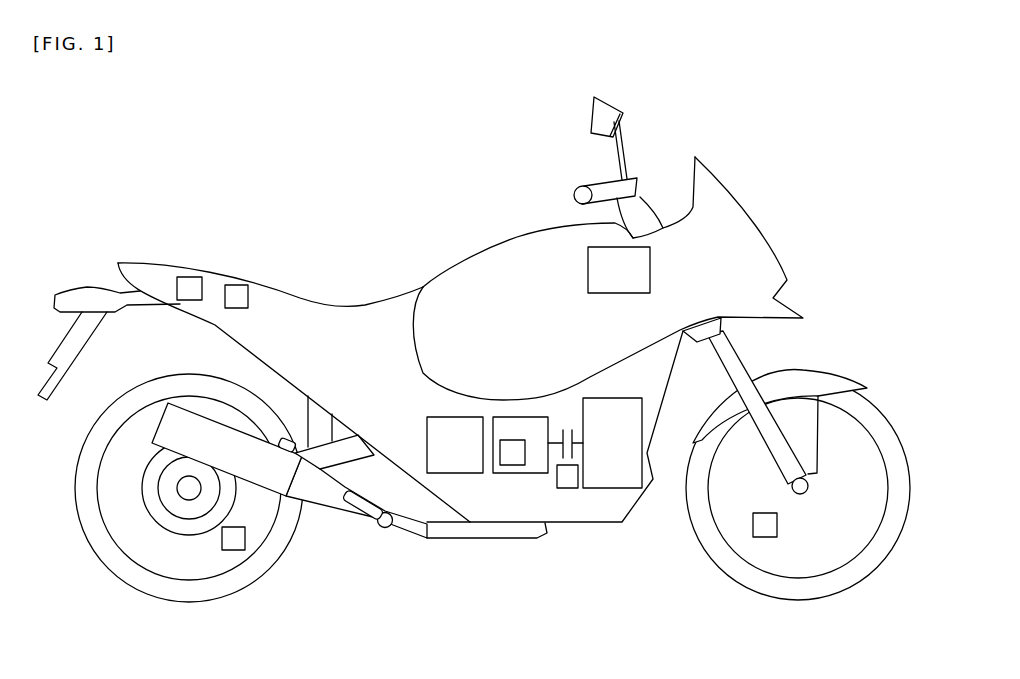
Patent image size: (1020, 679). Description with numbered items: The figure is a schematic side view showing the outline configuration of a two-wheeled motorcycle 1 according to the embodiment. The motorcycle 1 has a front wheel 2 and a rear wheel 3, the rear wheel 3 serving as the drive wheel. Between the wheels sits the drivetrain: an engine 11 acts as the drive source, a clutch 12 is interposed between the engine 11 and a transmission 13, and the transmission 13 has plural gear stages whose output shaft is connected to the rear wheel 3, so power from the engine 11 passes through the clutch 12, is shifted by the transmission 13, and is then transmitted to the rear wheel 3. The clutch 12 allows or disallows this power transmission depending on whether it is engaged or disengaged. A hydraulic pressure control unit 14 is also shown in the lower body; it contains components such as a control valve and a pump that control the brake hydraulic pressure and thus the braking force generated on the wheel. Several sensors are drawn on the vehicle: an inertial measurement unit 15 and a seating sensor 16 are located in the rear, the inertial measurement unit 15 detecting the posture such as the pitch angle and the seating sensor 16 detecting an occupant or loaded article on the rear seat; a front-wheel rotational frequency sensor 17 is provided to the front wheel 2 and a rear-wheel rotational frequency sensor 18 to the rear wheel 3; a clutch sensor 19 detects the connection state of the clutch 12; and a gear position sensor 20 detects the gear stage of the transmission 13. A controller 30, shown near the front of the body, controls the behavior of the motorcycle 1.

The motorcycle 1 is at (815, 111).
The front wheel 2 is at (827, 600).
The rear wheel 3 is at (167, 602).
The engine 11 is at (620, 488).
The clutch 12 is at (559, 459).
The transmission 13 is at (538, 474).
The hydraulic pressure control unit 14 is at (457, 474).
The inertial measurement unit 15 is at (185, 277).
The seating sensor 16 is at (233, 285).
The front-wheel rotational frequency sensor 17 is at (765, 537).
The rear-wheel rotational frequency sensor 18 is at (233, 550).
The clutch sensor 19 is at (568, 488).
The gear position sensor 20 is at (512, 466).
The controller 30 is at (612, 247).